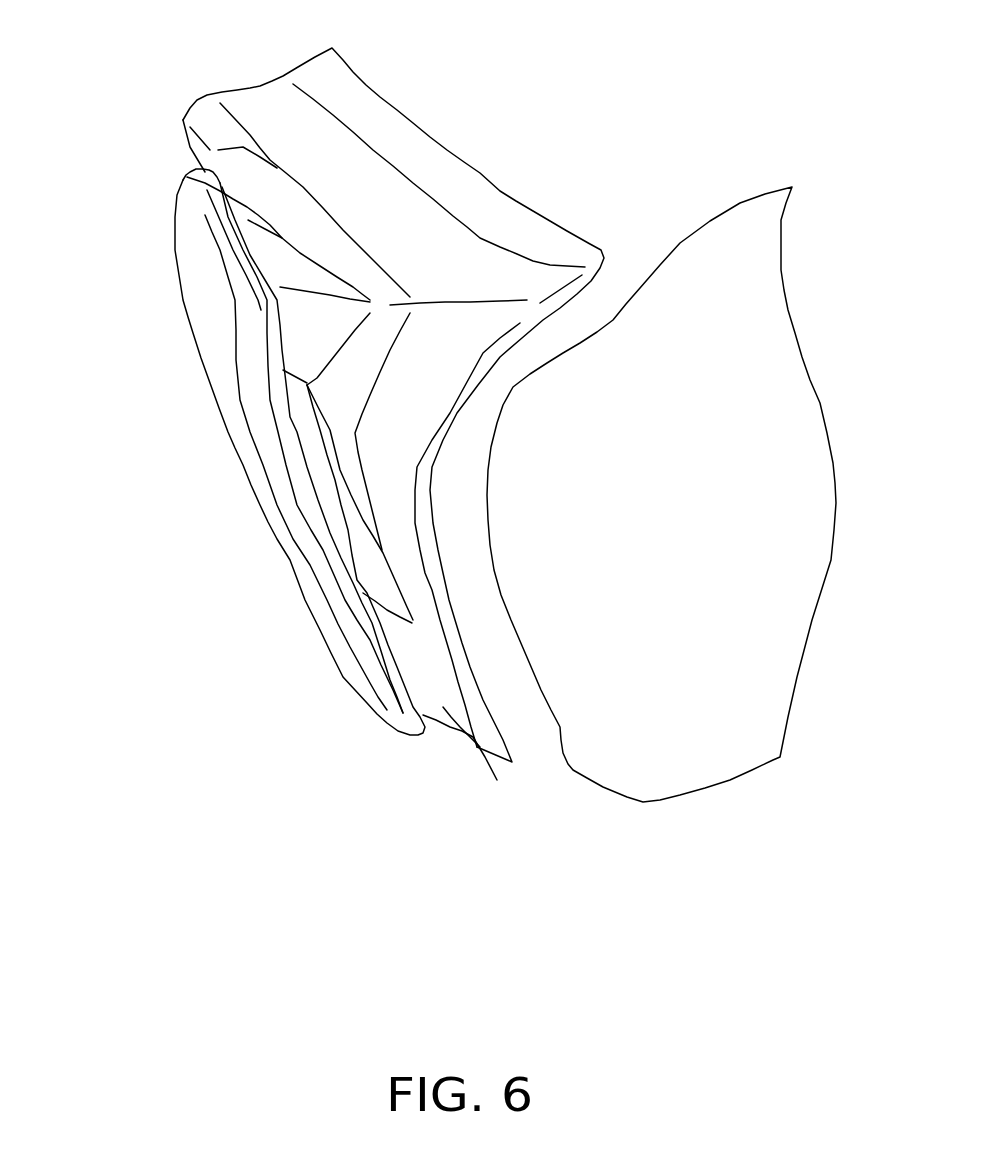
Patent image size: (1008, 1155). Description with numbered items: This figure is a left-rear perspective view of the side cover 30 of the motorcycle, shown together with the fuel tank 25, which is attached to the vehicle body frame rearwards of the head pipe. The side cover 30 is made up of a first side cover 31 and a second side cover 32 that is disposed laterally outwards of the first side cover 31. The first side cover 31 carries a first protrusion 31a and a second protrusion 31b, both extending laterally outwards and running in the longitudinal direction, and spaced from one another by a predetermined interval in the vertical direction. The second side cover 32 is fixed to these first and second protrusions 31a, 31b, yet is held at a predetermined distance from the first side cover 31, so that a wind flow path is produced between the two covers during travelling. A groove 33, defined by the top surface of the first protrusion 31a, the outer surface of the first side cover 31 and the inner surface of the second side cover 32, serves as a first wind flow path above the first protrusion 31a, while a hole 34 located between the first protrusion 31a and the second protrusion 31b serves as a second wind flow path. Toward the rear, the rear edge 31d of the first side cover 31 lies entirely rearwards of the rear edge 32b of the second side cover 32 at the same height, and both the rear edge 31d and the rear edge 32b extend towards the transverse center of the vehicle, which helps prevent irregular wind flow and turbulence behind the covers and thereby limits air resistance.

The fuel tank 25 is at (692, 548).
The side cover 30 is at (339, 444).
The first side cover 31 is at (409, 444).
The first protrusion 31a is at (407, 138).
The second protrusion 31b is at (513, 795).
The rear edge of the first side cover 31d is at (525, 535).
The second side cover 32 is at (353, 440).
The rear edge of the second side cover 32b is at (471, 546).
The groove 33 is at (220, 223).
The hole 34 is at (281, 448).